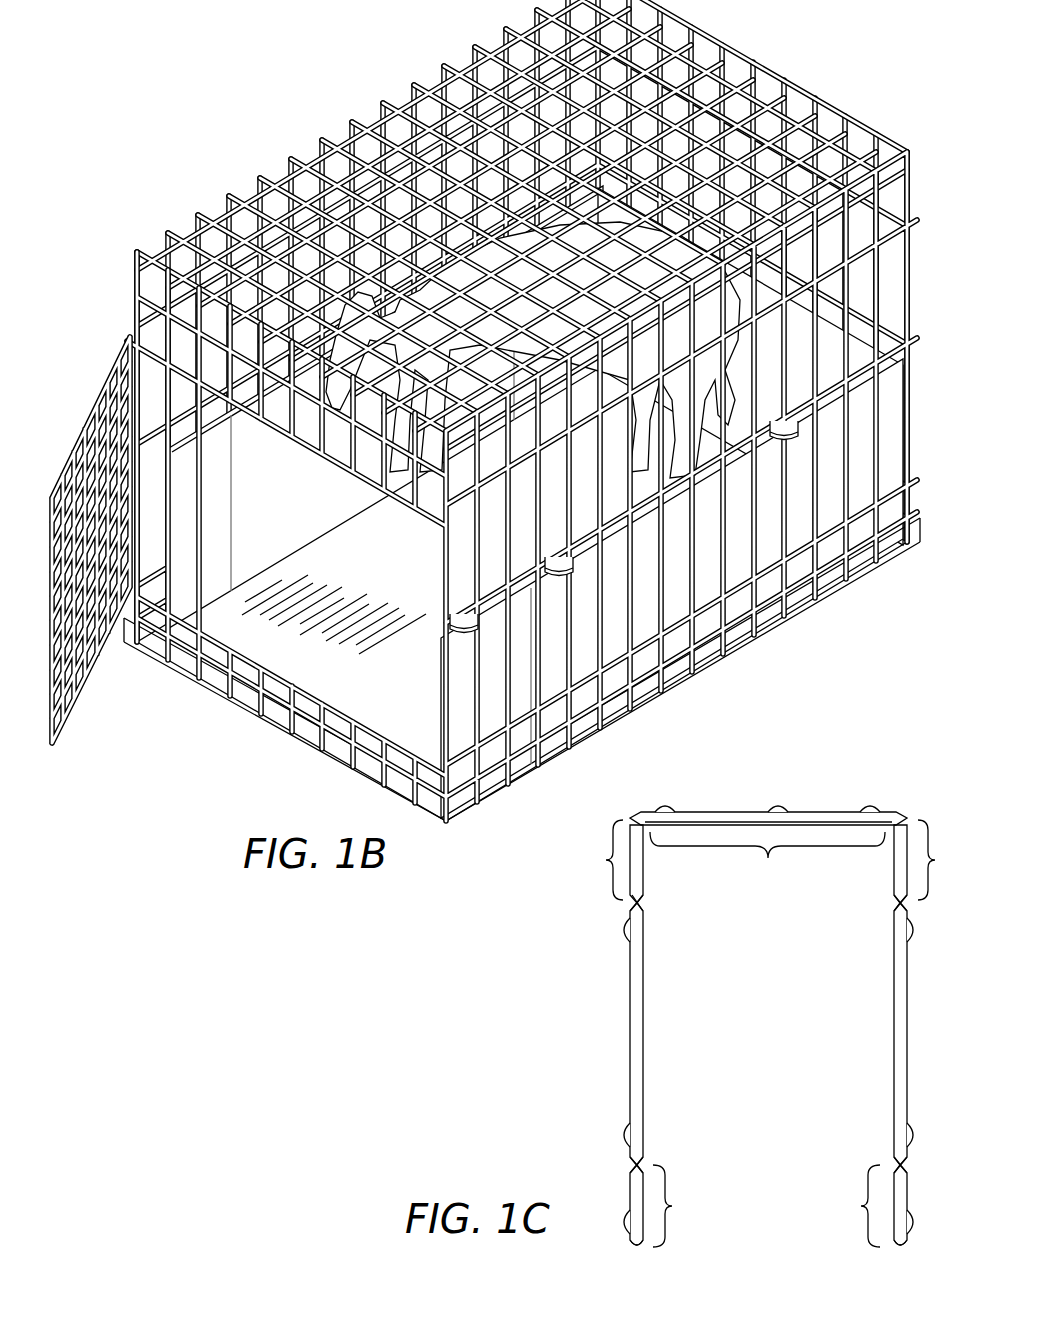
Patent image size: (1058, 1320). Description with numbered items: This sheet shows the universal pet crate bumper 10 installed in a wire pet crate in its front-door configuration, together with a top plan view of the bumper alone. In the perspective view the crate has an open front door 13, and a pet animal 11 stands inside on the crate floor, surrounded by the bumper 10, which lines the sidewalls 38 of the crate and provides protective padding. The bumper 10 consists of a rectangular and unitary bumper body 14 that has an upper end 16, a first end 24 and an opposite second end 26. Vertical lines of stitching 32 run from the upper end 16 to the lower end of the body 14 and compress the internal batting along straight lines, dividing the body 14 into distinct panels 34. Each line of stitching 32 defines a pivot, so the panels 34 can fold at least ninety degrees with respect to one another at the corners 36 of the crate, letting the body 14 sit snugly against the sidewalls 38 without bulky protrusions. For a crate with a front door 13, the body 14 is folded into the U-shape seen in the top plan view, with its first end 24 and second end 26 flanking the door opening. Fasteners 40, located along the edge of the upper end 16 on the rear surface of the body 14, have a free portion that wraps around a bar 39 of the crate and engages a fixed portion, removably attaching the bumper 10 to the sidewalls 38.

In FIG. 1C, the universal pet crate bumper 10 is at (770, 992).
In FIG. 1B, the pet animal 11 is at (370, 405).
In FIG. 1B, the front door 13 is at (100, 465).
In FIG. 1B, the bumper body 14 is at (855, 345).
In FIG. 1C, the bumper body 14 is at (730, 812).
In FIG. 1C, the upper end 16 is at (823, 820).
In FIG. 1C, the first end 24 is at (637, 1245).
In FIG. 1C, the second end 26 is at (905, 1245).
In FIG. 1B, the vertical lines of stitching 32 is at (240, 592).
In FIG. 1C, the vertical lines of stitching 32 is at (637, 818).
In FIG. 1B, the panels 34 is at (195, 567).
In FIG. 1C, the panels 34 is at (770, 1033).
In FIG. 1B, the corners 36 is at (905, 412).
In FIG. 1B, the sidewalls 38 is at (795, 572).
In FIG. 1B, the bar 39 is at (453, 612).
In FIG. 1B, the fasteners 40 is at (475, 650).
In FIG. 1C, the fasteners 40 is at (910, 935).